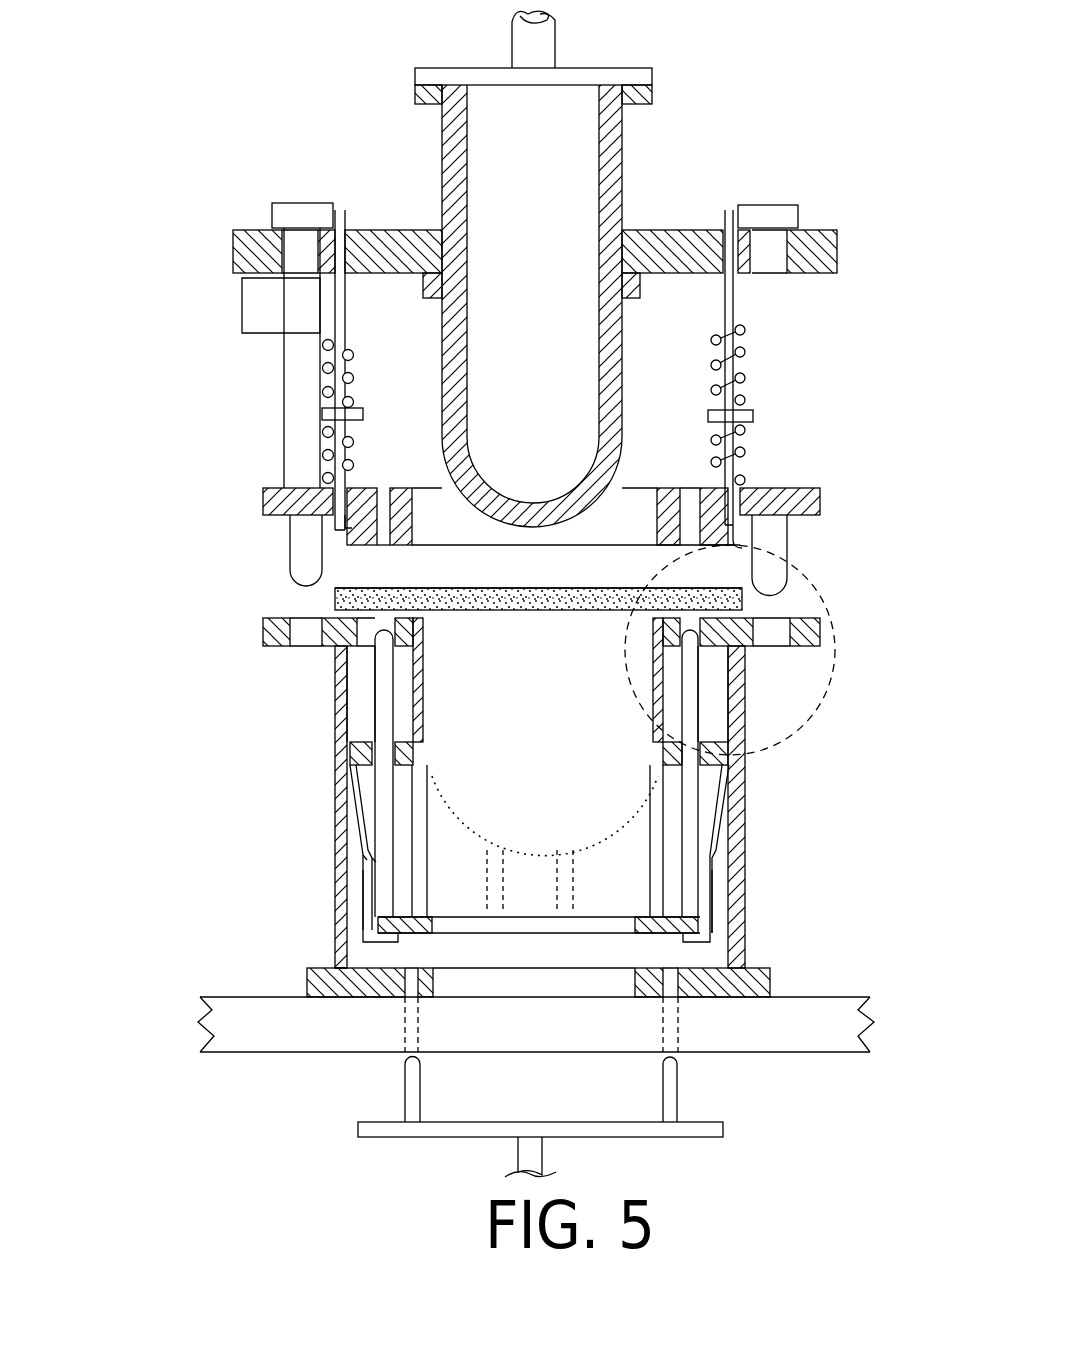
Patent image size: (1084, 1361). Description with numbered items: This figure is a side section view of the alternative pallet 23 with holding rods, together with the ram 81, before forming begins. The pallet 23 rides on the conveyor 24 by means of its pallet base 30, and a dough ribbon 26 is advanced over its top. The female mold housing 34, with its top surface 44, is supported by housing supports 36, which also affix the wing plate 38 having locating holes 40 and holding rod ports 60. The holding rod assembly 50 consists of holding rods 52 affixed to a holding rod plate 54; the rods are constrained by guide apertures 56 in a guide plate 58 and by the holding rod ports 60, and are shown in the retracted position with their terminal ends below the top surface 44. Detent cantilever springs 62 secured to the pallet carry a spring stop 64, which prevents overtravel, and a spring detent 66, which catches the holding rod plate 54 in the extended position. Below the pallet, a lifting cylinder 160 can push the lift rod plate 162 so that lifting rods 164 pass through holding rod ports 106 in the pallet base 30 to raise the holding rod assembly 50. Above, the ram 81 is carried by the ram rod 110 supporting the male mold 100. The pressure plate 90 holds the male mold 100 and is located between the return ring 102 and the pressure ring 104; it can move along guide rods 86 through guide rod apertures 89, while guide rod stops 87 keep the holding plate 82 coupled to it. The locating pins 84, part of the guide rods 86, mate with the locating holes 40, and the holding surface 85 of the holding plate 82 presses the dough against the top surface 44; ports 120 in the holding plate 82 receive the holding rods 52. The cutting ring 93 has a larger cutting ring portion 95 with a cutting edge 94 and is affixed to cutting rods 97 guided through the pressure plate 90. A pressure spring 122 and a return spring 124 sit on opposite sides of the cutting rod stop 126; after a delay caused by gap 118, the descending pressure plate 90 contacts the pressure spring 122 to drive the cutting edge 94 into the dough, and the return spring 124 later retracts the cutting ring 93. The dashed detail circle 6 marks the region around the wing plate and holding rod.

The detail circle 6 is at (835, 625).
The pallet 23 is at (265, 793).
The conveyor 24 is at (200, 1022).
The dough ribbon 26 is at (340, 590).
The pallet base 30 is at (307, 983).
The female mold housing 34 is at (375, 680).
The housing supports 36 is at (335, 712).
The wing plate 38 is at (263, 634).
The locating holes 40 is at (773, 642).
The top surface 44 is at (710, 617).
The holding rod assembly 50 is at (655, 945).
The holding rods 52 is at (375, 812).
The holding rod plate 54 is at (363, 924).
The guide apertures 56 is at (705, 752).
The guide plate 58 is at (350, 752).
The holding rod ports 60 is at (378, 628).
The detent cantilever springs 62 is at (363, 878).
The spring stop 64 is at (712, 938).
The spring detent 66 is at (360, 856).
The ram 81 is at (840, 305).
The holding plate 82 is at (263, 498).
The locating pins 84 is at (290, 548).
The holding surface 85 is at (392, 548).
The guide rods 86 is at (330, 465).
The guide rod stops 87 is at (305, 203).
The guide rod apertures 89 is at (262, 240).
The pressure plate 90 is at (233, 247).
The cutting ring 93 is at (343, 522).
The cutting edge 94 is at (770, 560).
The cutting ring portion 95 is at (738, 545).
The cutting rods 97 is at (338, 468).
The male mold 100 is at (622, 175).
The return ring 102 is at (740, 282).
The pressure ring 104 is at (654, 93).
The holding rod ports 106 is at (415, 968).
The ram rod 110 is at (557, 40).
The gap 118 is at (242, 305).
The ports 120 is at (337, 470).
The pressure spring 122 is at (752, 352).
The return spring 124 is at (745, 458).
The cutting rod stop 126 is at (755, 416).
The lifting cylinder 160 is at (542, 1152).
The lift rod plate 162 is at (358, 1128).
The lifting rods 164 is at (405, 1082).